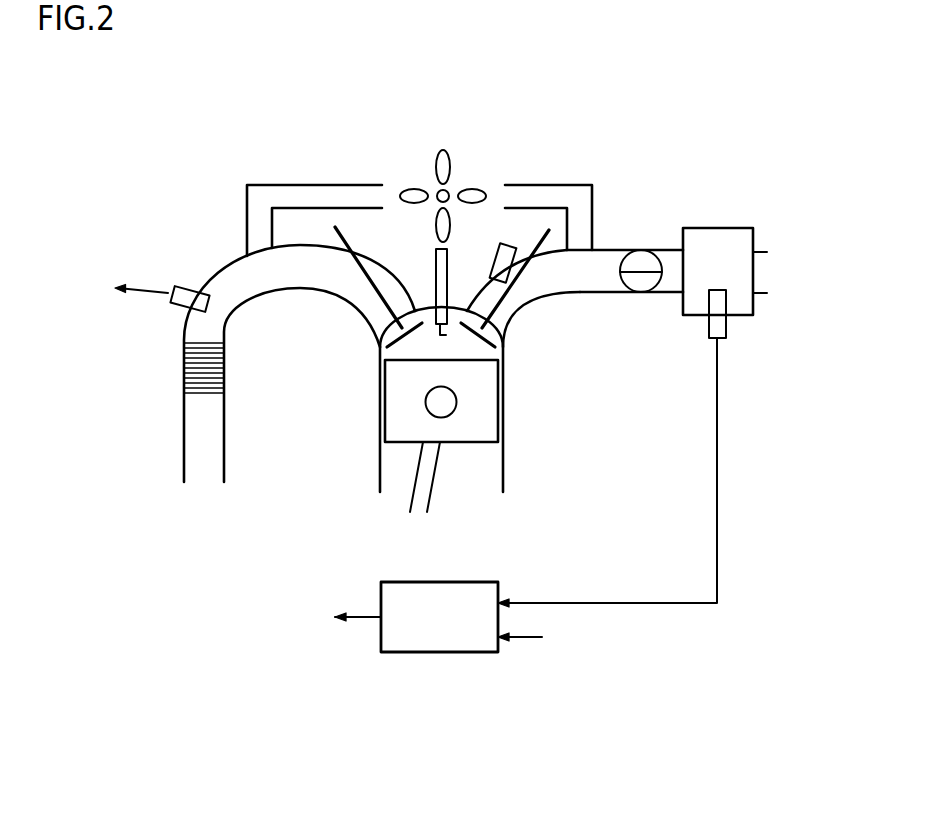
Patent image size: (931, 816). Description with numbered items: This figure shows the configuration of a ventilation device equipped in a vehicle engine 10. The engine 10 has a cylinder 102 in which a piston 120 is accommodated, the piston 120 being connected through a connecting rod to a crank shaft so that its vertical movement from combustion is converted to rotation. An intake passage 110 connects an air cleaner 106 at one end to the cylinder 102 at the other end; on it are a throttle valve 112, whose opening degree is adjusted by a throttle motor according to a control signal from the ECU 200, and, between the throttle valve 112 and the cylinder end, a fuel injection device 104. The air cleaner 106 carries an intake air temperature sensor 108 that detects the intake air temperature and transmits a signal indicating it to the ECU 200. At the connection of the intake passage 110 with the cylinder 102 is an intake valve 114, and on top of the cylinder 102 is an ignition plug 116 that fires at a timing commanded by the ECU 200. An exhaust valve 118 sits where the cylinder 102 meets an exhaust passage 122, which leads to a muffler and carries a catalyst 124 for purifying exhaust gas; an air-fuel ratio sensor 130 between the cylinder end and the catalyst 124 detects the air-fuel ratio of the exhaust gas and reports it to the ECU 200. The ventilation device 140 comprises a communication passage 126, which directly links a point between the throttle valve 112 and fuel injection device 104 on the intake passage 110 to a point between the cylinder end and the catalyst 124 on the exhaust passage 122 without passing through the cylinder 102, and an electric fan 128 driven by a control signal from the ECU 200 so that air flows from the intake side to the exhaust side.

The engine 10 is at (603, 118).
The cylinder 102 is at (503, 476).
The fuel injection device 104 is at (510, 243).
The air cleaner 106 is at (722, 228).
The intake air temperature sensor 108 is at (727, 328).
The intake passage 110 is at (675, 250).
The throttle valve 112 is at (641, 293).
The intake valve 114 is at (533, 282).
The ignition plug 116 is at (450, 282).
The exhaust valve 118 is at (370, 268).
The piston 120 is at (485, 408).
The exhaust passage 122 is at (278, 290).
The catalyst 124 is at (184, 370).
The communication passage 126 is at (303, 182).
The fan 128 is at (457, 145).
The air-fuel ratio sensor 130 is at (188, 290).
The ventilation device 140 is at (270, 155).
The ECU 200 is at (463, 582).